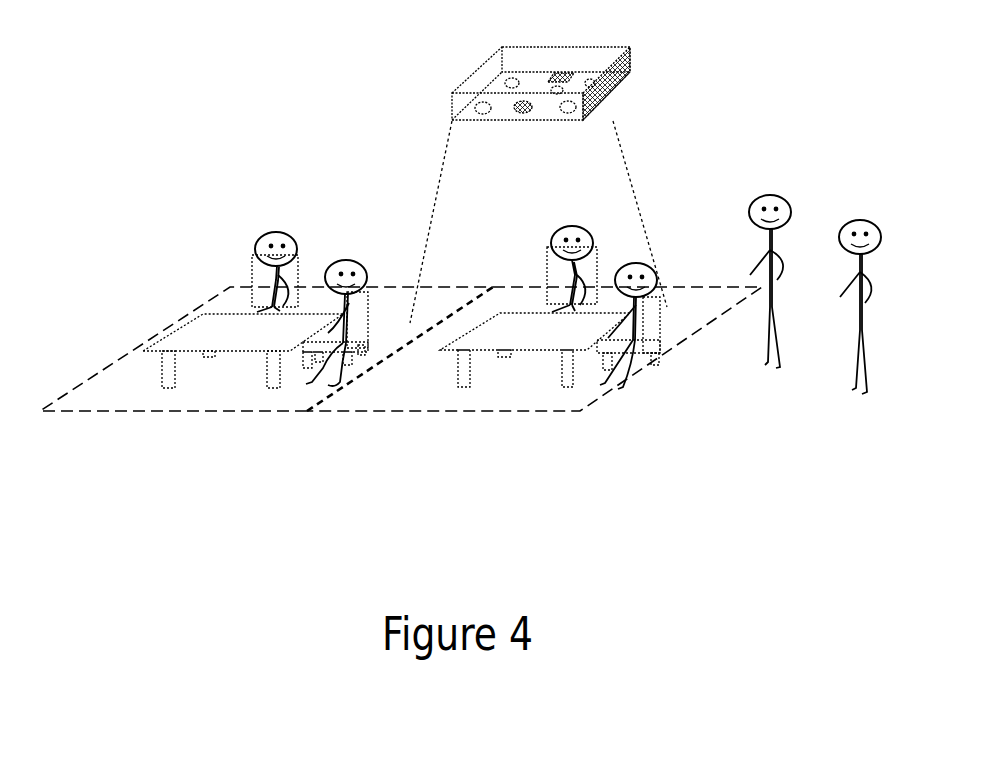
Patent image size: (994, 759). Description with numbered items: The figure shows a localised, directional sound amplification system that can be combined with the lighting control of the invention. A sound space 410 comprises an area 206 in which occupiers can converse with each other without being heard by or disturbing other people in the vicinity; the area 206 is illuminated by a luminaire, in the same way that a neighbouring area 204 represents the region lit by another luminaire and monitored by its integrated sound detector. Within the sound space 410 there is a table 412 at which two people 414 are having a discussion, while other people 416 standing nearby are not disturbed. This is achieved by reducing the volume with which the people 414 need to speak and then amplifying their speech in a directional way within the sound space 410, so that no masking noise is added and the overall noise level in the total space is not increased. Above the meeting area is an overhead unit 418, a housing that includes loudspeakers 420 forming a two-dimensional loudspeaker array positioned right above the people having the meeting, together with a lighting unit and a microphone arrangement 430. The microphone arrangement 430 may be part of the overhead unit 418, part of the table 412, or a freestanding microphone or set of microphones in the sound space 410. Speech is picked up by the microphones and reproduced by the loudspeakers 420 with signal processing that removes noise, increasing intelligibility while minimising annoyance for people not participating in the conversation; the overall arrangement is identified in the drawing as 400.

The area 204 is at (237, 418).
The area 206 is at (481, 418).
The sensing device 400 is at (549, 63).
The sound space 410 is at (612, 152).
The table 412 is at (500, 310).
The people 414 is at (633, 263).
The other people 416 is at (343, 261).
The overhead unit 418 is at (630, 60).
The loudspeakers 420 is at (533, 80).
The microphone arrangement 430 is at (562, 77).